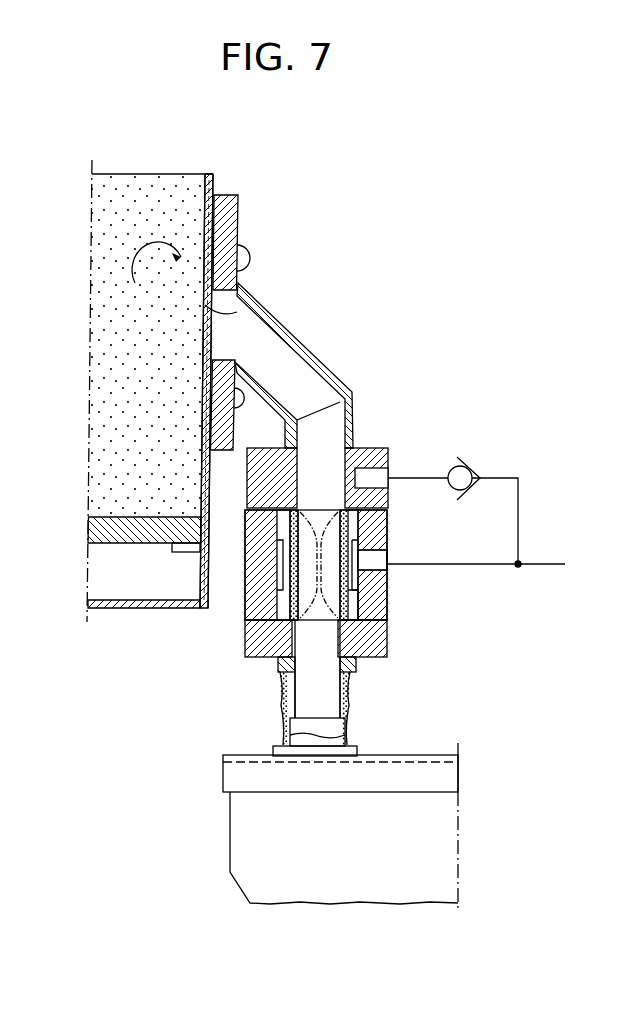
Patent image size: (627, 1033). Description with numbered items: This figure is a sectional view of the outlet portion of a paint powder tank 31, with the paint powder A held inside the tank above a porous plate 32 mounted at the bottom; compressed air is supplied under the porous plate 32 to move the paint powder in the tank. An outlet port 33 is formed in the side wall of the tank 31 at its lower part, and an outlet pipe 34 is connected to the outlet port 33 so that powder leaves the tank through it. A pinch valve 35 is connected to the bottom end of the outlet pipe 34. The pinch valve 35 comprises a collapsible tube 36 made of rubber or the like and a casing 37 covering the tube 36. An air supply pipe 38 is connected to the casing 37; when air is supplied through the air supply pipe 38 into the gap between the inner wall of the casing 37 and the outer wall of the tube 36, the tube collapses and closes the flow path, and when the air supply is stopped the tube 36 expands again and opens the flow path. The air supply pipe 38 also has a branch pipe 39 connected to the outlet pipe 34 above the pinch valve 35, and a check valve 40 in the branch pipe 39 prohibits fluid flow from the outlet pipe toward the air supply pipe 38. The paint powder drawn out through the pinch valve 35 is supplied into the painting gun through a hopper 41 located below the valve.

The granular material A is at (127, 197).
The paint powder tank 31 is at (213, 187).
The porous plate 32 is at (107, 532).
The outlet port 33 is at (240, 293).
The outlet pipe 34 is at (306, 347).
The pinch valve 35 is at (240, 607).
The collapsible tube 36 is at (362, 592).
The casing 37 is at (373, 612).
The air supply pipe 38 is at (447, 565).
The branch pipe 39 is at (520, 522).
The check valve 40 is at (453, 469).
The hopper 41 is at (410, 782).